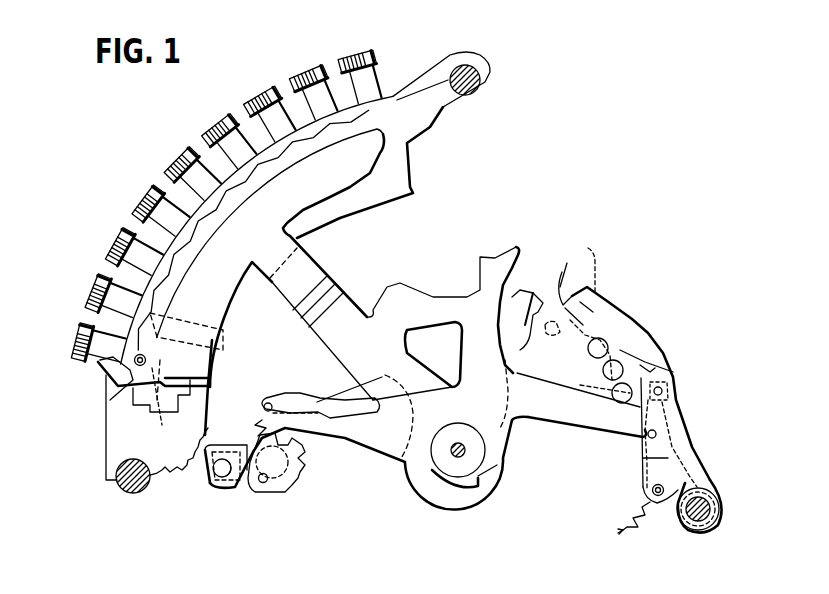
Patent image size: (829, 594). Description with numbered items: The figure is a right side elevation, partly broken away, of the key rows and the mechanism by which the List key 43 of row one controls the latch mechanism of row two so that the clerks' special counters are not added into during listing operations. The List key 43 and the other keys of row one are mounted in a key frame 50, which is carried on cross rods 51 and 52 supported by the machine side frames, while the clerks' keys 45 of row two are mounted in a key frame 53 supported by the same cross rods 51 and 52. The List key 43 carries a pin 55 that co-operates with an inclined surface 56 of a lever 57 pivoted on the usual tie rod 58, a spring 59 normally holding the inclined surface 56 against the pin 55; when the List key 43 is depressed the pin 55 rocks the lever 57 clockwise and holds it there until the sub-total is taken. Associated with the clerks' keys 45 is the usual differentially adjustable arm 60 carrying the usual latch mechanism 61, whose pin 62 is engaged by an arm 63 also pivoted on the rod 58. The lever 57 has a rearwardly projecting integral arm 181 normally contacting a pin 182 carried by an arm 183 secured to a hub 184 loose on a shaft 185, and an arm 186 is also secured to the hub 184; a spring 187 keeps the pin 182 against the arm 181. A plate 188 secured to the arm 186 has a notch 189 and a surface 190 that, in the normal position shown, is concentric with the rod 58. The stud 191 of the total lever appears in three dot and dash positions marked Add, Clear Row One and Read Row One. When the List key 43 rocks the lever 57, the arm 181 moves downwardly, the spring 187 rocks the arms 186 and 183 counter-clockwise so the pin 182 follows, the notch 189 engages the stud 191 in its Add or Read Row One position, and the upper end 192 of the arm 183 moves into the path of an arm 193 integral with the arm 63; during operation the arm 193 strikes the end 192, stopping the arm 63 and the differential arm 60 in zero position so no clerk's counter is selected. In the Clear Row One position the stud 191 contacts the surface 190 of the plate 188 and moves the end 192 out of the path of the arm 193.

The List key 43 is at (70, 353).
The clerks' keys 45 is at (350, 53).
The key frame 50 is at (413, 130).
The cross rod 51 is at (478, 90).
The cross rod 52 is at (140, 490).
The key frame 53 is at (388, 95).
The pin 55 is at (133, 363).
The inclined surface 56 is at (164, 427).
The lever 57 is at (340, 300).
The tie rod 58 is at (465, 457).
The spring 59 is at (262, 420).
The differentially adjustable arm 60 is at (297, 477).
The latch mechanism 61 is at (237, 490).
The pin 62 is at (223, 473).
The arm 63 is at (340, 393).
The arm 181 is at (627, 430).
The pin 182 is at (673, 397).
The arm 183 is at (677, 450).
The hub 184 is at (695, 477).
The shaft 185 is at (712, 517).
The arm 186 is at (693, 467).
The spring 187 is at (647, 520).
The plate 188 is at (660, 353).
The notch 189 is at (673, 370).
The surface 190 is at (574, 281).
The stud 191 is at (592, 370).
The upper end 192 is at (569, 310).
The arm 193 is at (525, 297).